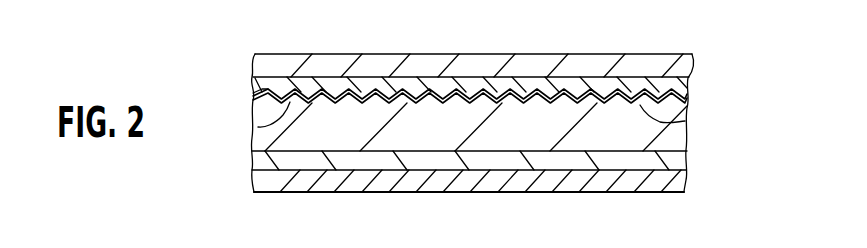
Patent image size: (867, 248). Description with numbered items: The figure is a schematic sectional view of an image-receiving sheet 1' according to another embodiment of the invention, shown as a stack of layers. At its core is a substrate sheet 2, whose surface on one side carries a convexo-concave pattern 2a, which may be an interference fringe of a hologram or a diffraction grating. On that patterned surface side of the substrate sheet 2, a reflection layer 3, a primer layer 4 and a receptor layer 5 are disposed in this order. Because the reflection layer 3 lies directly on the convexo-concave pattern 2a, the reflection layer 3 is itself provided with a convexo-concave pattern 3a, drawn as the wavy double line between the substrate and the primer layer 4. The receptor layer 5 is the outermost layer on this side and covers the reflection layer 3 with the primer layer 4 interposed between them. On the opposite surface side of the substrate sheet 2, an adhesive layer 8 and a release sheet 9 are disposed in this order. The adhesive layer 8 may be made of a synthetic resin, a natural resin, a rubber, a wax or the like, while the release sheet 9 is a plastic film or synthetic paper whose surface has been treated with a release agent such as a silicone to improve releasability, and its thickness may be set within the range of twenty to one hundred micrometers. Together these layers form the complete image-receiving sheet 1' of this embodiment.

The image-receiving sheet 1' is at (493, 99).
The receptor layer 5 is at (262, 64).
The primer layer 4 is at (682, 86).
The reflection layer 3 is at (685, 120).
The convexo-concave pattern 3a is at (252, 81).
The substrate sheet 2 is at (670, 137).
The convexo-concave pattern 2a is at (258, 127).
The adhesive layer 8 is at (258, 158).
The release sheet 9 is at (258, 176).